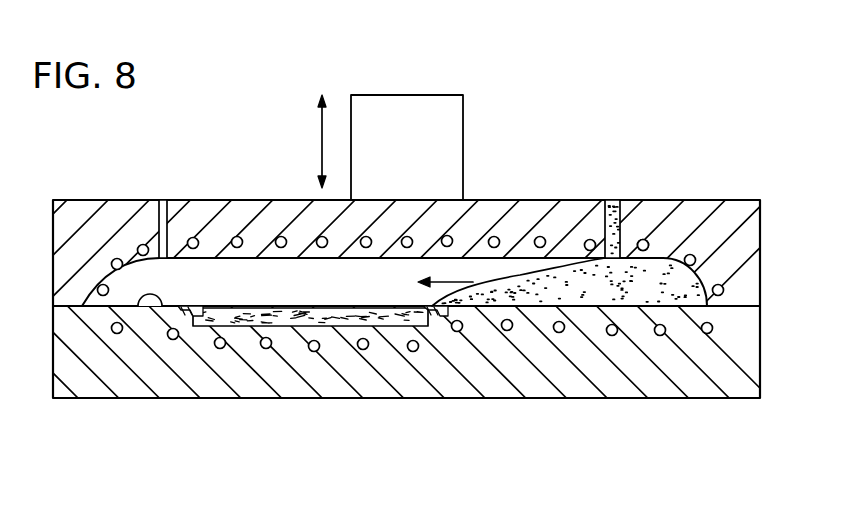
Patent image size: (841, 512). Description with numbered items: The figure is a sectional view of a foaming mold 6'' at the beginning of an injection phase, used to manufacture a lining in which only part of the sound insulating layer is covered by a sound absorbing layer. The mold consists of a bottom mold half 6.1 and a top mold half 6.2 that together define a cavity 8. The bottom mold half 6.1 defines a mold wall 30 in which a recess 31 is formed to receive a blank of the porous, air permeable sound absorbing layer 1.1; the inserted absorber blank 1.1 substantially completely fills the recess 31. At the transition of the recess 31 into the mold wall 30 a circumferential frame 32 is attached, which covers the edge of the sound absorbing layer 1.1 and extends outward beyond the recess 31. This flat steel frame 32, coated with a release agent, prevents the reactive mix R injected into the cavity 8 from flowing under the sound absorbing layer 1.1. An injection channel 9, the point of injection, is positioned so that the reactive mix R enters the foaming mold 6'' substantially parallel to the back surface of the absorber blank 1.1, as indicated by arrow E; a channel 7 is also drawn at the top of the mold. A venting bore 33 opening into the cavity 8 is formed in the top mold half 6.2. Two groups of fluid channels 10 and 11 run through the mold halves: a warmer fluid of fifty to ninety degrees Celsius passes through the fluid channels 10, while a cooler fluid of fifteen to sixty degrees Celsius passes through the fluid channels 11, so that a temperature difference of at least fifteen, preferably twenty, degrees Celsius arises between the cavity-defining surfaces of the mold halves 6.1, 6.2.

The foaming mold 6'' is at (406, 210).
The bottom mold half 6.1 is at (702, 390).
The top mold half 6.2 is at (733, 205).
The feed channel 7 is at (609, 200).
The cavity 8 is at (213, 273).
The injection channel 9 is at (645, 239).
The fluid channels 10 is at (319, 237).
The fluid channels 11 is at (175, 340).
The sound absorbing layer 1.1 is at (293, 327).
The mold wall 30 is at (140, 306).
The recess 31 is at (438, 317).
The circumferential frame 32 is at (188, 307).
The venting bore 33 is at (148, 202).
The arrow E is at (455, 280).
The reactive mix R is at (567, 277).